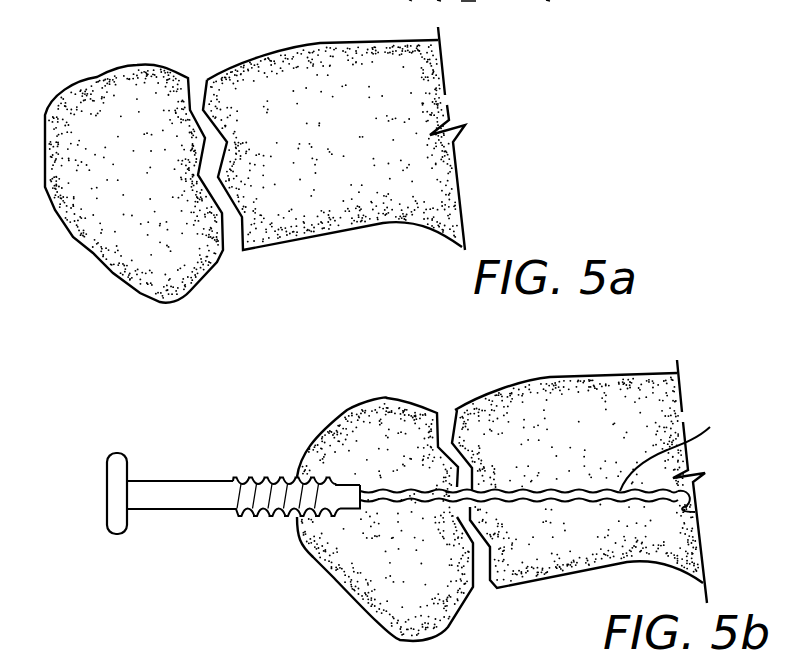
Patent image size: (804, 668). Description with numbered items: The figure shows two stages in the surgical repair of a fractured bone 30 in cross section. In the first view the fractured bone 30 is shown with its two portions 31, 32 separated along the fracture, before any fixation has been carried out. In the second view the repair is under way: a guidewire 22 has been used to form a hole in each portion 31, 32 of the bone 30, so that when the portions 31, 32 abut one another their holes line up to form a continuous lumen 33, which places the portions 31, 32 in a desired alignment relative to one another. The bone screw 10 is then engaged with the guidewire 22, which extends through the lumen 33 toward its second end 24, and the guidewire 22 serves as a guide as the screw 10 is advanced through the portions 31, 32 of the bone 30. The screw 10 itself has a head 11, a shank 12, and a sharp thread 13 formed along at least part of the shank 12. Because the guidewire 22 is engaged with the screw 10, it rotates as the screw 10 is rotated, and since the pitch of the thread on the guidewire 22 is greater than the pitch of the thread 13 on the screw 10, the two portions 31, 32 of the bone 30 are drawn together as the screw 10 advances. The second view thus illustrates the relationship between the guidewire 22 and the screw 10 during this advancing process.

In FIG. 5b, the bone screw 10 is at (221, 511).
In FIG. 5b, the head 11 is at (118, 535).
In FIG. 5b, the shank 12 is at (188, 488).
In FIG. 5b, the sharp thread 13 is at (277, 522).
In FIG. 5b, the guidewire 22 is at (548, 502).
In FIG. 5b, the second end 24 is at (697, 512).
In FIG. 5a, the bone 30 is at (248, 213).
In FIG. 5a, the portion of bone 31 is at (102, 248).
In FIG. 5b, the portion of bone 31 is at (358, 422).
In FIG. 5a, the portion of bone 32 is at (333, 220).
In FIG. 5b, the portion of bone 32 is at (587, 392).
In FIG. 5b, the continuous lumen 33 is at (683, 443).